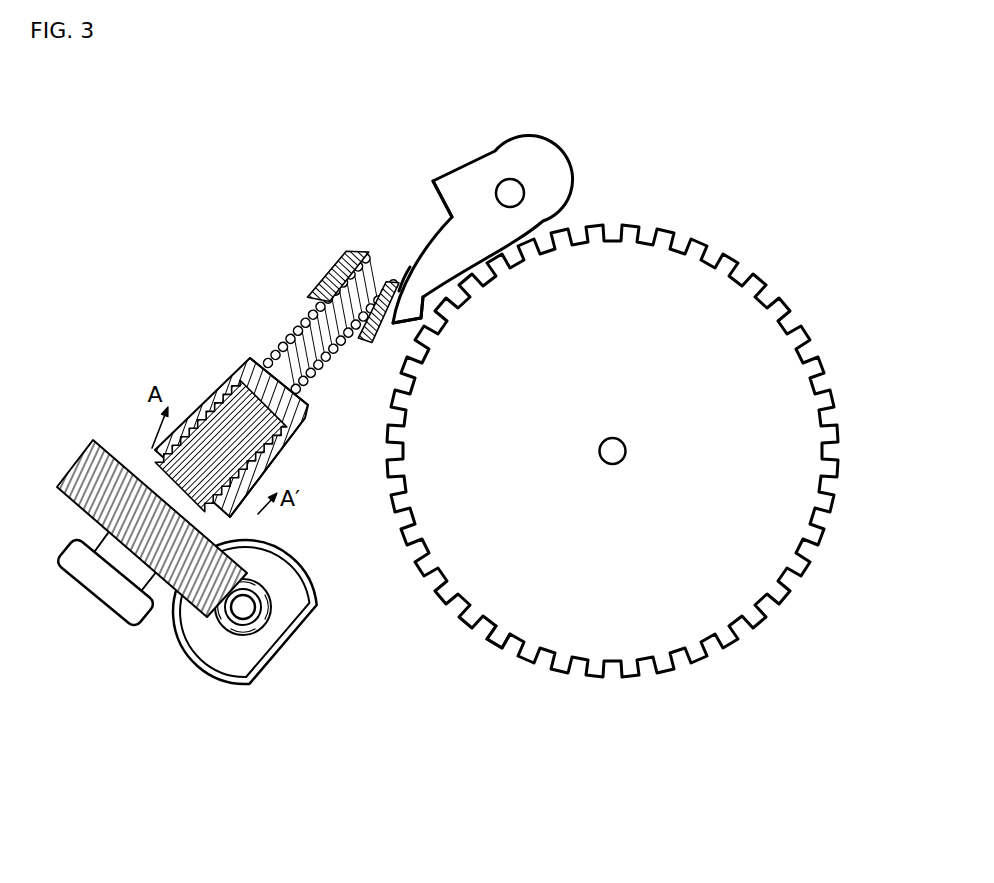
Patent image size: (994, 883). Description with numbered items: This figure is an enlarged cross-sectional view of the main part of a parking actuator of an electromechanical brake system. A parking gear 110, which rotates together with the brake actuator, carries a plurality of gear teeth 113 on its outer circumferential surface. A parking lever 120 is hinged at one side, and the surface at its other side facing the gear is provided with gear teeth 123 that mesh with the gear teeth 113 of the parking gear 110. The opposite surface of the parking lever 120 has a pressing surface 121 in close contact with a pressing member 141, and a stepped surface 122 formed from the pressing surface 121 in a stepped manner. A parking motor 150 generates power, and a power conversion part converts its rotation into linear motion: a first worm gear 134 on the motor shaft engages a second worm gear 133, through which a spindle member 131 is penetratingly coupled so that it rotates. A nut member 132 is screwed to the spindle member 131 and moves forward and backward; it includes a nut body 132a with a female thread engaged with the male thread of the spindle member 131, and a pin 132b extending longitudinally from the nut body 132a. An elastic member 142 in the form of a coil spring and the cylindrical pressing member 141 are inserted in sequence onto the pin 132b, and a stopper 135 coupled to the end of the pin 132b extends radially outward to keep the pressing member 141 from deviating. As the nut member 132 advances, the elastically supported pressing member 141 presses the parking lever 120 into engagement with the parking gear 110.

The parking gear 110 is at (612, 640).
The gear teeth 113 is at (494, 637).
The parking lever 120 is at (490, 158).
The pressing surface 121 is at (390, 258).
The stepped surface 122 is at (424, 198).
The gear teeth 123 is at (402, 322).
The spindle member 131 is at (160, 480).
The nut member 132 is at (260, 415).
The nut body 132a is at (292, 448).
The pin 132b is at (300, 330).
The second worm gear 133 is at (163, 590).
The first worm gear 134 is at (273, 627).
The stopper 135 is at (310, 302).
The pressing member 141 is at (328, 290).
The elastic member 142 is at (304, 330).
The parking motor 150 is at (240, 668).